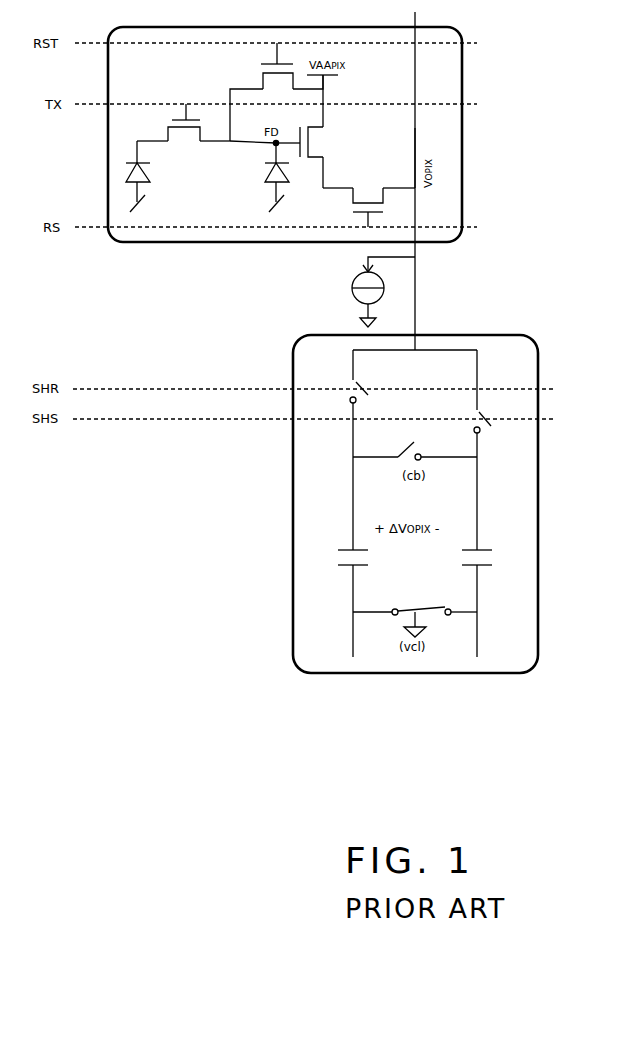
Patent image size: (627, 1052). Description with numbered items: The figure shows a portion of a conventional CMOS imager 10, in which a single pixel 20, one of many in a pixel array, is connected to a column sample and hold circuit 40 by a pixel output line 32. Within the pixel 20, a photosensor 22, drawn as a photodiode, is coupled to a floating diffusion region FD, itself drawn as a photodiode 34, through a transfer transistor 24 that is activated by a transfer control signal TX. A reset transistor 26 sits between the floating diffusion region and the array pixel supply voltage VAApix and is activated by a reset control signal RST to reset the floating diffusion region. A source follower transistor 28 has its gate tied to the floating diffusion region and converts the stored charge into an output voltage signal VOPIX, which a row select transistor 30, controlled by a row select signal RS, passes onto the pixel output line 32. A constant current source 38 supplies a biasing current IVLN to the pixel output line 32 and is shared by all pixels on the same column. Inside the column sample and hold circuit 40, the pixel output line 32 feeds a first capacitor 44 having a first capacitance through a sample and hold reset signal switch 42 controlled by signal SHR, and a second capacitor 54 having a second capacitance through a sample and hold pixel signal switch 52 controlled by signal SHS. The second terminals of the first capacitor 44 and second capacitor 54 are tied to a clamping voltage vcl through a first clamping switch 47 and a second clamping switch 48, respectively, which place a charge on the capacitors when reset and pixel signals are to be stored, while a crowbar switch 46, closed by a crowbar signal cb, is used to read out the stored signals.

The CMOS imager 10 is at (540, 222).
The pixel 20 is at (193, 242).
The photosensor 22 is at (128, 178).
The transfer transistor 24 is at (172, 120).
The reset transistor 26 is at (262, 66).
The source follower transistor 28 is at (322, 127).
The row select transistor 30 is at (356, 187).
The pixel output line 32 is at (415, 135).
The photodiode 34 is at (270, 168).
The constant current source 38 is at (352, 293).
The column sample and hold circuit 40 is at (294, 664).
The sample and hold reset signal switch 42 is at (357, 383).
The first capacitor 44 is at (348, 548).
The crowbar switch 46 is at (400, 456).
The first clamping switch 47 is at (382, 610).
The second clamping switch 48 is at (438, 615).
The sample and hold pixel signal switch 52 is at (487, 416).
The second capacitor 54 is at (481, 548).